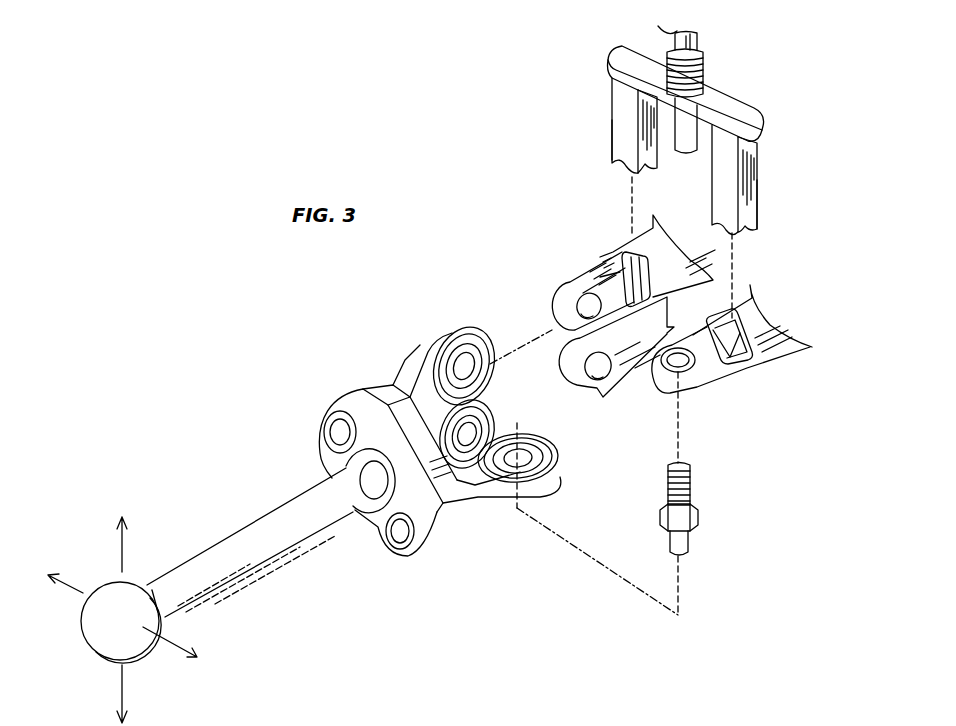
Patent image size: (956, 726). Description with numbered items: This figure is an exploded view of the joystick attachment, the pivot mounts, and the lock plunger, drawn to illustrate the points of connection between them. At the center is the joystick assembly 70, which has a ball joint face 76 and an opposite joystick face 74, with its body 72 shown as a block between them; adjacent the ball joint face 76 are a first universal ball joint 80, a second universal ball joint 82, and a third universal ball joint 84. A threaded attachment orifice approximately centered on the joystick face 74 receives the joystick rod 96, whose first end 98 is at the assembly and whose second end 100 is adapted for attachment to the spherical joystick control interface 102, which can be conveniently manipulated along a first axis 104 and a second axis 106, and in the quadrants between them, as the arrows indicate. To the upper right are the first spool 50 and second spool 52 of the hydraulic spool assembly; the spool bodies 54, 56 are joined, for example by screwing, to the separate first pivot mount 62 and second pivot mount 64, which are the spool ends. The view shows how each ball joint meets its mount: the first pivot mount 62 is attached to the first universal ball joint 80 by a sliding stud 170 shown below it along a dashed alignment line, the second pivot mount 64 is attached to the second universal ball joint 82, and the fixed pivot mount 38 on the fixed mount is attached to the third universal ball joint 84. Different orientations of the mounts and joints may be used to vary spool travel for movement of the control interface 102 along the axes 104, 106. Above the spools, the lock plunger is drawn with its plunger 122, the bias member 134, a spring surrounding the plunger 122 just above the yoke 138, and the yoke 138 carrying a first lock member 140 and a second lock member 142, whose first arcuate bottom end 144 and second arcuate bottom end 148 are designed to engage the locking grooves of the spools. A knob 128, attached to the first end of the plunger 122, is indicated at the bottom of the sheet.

The fixed pivot mount 38 is at (600, 370).
The first spool 50 is at (755, 388).
The second spool 52 is at (566, 220).
The spool body 54 is at (763, 353).
The second spool mount 56 is at (645, 250).
The first pivot mount 62 is at (693, 367).
The second pivot mount 64 is at (582, 292).
The joystick assembly 70 is at (319, 400).
The pedal body 72 is at (443, 518).
The joystick face 74 is at (395, 532).
The ball joint face 76 is at (375, 390).
The first universal ball joint 80 is at (553, 463).
The second universal ball joint 82 is at (480, 333).
The third universal ball joint 84 is at (492, 405).
The joystick rod 96 is at (253, 530).
The first end 98 is at (308, 503).
The second end 100 is at (155, 583).
The joystick control interface 102 is at (107, 593).
The first axis 104 is at (72, 592).
The second axis 106 is at (118, 540).
The plunger 122 is at (700, 38).
The knob 128 is at (485, 725).
The bias member 134 is at (700, 82).
The yoke 138 is at (628, 54).
The first lock member 140 is at (728, 183).
The second lock member 142 is at (618, 110).
The first arcuate bottom end 144 is at (754, 229).
The second arcuate bottom end 148 is at (612, 160).
The sliding stud 170 is at (693, 505).